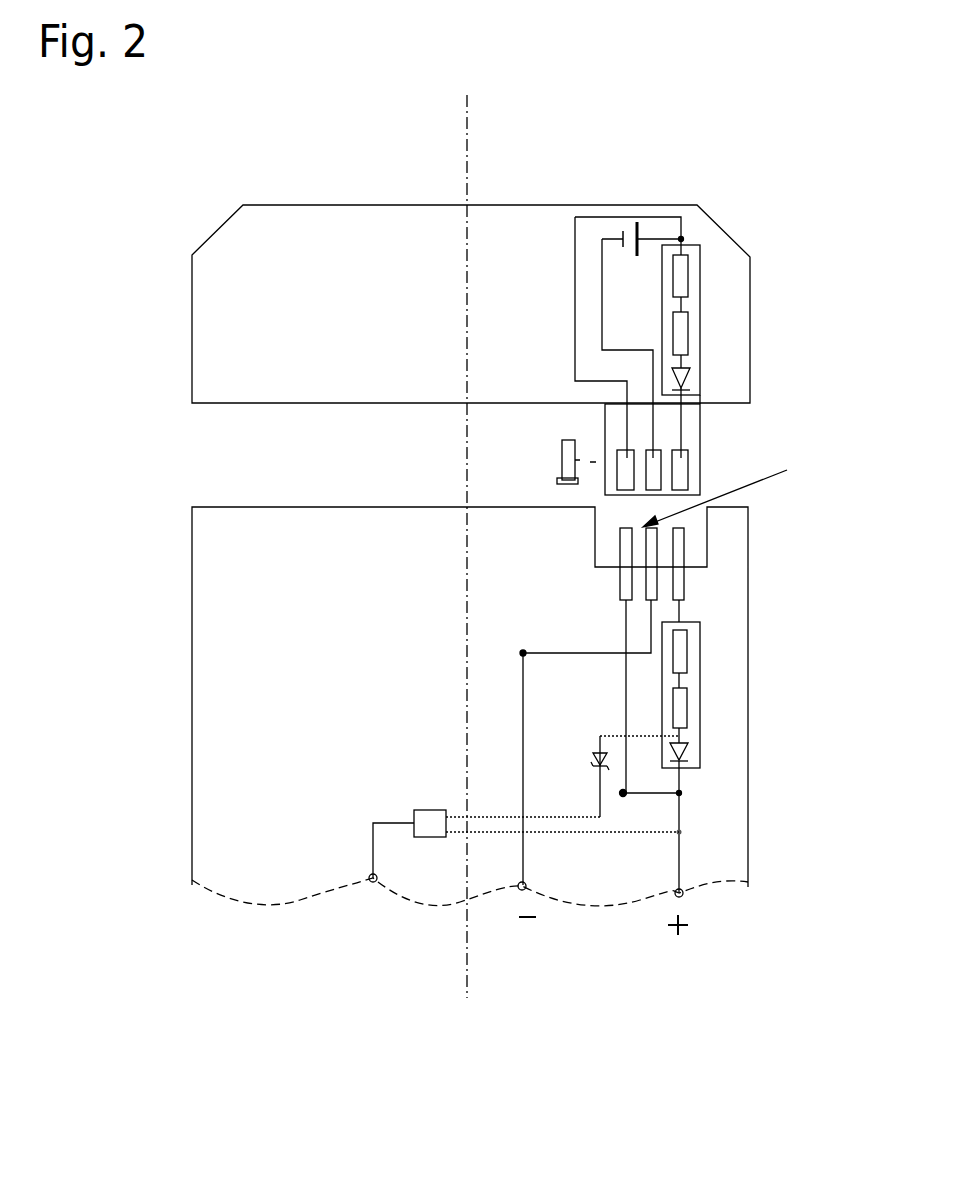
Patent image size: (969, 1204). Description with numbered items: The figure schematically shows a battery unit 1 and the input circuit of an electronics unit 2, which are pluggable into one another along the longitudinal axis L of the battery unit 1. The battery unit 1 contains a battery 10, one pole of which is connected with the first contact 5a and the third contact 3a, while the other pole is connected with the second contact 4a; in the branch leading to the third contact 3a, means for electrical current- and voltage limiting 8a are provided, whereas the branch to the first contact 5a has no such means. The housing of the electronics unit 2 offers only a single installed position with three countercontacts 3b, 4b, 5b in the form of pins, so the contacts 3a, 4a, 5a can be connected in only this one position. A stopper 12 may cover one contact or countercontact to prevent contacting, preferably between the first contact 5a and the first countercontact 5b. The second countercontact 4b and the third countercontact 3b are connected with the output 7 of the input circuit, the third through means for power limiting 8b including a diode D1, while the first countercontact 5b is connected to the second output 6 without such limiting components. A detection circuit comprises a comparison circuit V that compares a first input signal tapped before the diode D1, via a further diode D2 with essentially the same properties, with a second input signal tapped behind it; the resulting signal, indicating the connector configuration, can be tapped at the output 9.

The battery unit 1 is at (262, 230).
The electronics unit 2 is at (190, 643).
The third contact 3a is at (678, 470).
The third countercontact 3b is at (683, 553).
The second contact 4a is at (645, 462).
The second countercontact 4b is at (654, 537).
The first contact 5a is at (620, 468).
The first countercontact 5b is at (620, 546).
The second output 6 is at (527, 888).
The output of the input circuit 7 is at (686, 896).
The means for electrical current- and voltage limiting 8a is at (705, 327).
The means for power limiting 8b is at (761, 757).
The output 9 is at (372, 882).
The battery 10 is at (612, 272).
The stopper 12 is at (560, 460).
The diode D1 is at (687, 750).
The diode D2 is at (605, 757).
The comparison circuit V is at (414, 815).
The longitudinal axis L is at (466, 995).